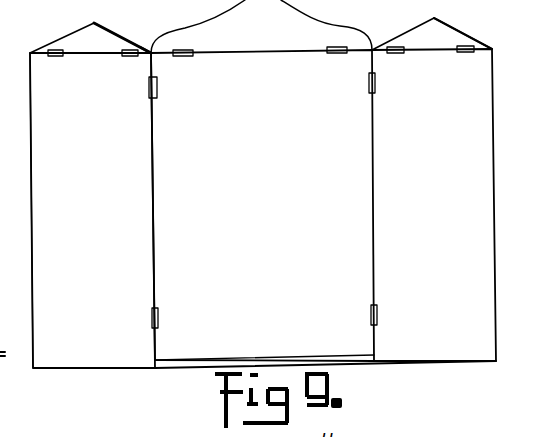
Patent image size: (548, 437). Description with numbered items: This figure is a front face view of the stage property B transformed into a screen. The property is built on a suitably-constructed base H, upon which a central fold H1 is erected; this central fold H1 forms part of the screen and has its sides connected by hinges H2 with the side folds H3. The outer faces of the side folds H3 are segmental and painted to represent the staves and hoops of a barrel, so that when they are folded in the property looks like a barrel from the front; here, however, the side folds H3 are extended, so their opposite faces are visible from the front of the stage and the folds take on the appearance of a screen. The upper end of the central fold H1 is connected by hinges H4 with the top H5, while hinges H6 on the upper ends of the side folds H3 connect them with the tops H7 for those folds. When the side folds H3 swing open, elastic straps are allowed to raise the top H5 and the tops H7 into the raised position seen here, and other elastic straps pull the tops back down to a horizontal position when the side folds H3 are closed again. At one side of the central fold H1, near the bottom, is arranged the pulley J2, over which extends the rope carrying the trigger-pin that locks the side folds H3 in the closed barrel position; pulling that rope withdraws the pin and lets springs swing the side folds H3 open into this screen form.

The base H is at (287, 360).
The central fold H1 is at (263, 208).
The hinges H2 is at (389, 312).
The side folds H3 is at (0, 231).
The hinges H4 is at (334, 55).
The top H5 is at (307, 32).
The hinges H6 is at (492, 33).
The tops H7 is at (461, 18).
The stage property B is at (143, 37).
The pulley J2 is at (2, 350).